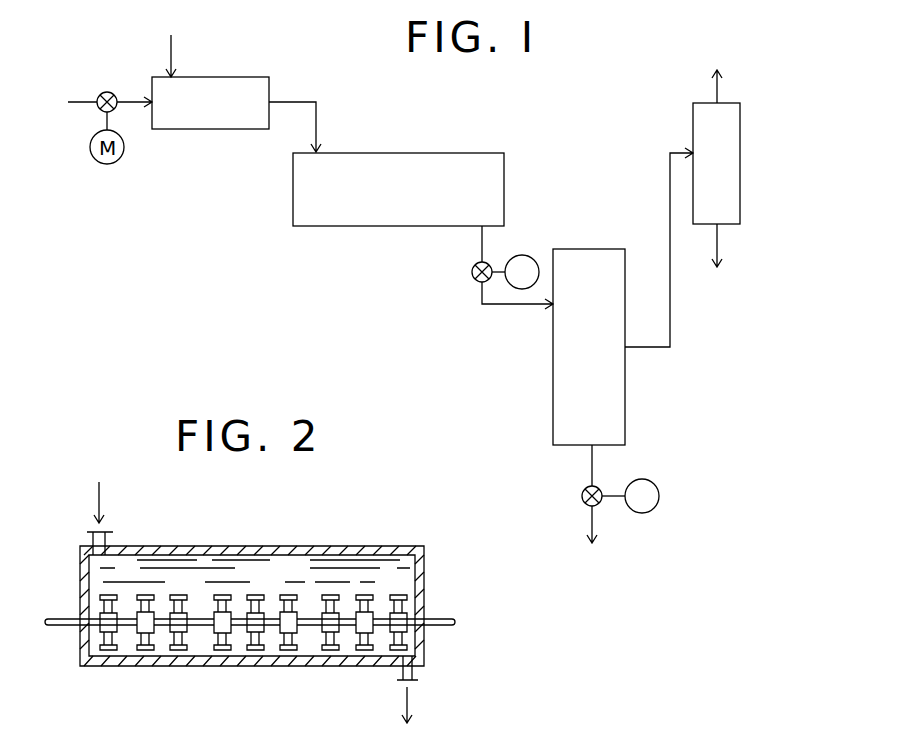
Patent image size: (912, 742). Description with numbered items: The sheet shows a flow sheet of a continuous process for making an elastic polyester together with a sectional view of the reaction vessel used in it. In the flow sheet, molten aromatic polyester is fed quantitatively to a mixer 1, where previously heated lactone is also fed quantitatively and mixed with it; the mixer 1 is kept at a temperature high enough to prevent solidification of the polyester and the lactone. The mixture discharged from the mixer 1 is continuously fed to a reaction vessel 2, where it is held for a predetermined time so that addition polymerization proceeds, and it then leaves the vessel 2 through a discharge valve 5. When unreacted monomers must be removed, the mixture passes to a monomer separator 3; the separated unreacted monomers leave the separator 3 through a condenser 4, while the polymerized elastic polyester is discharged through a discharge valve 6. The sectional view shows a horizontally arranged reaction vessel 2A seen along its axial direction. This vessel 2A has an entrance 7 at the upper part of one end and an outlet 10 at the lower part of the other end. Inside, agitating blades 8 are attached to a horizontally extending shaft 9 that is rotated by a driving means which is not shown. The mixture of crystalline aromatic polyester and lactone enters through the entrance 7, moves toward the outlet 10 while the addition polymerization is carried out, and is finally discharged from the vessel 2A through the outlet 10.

In FIG. 1, the mixer 1 is at (221, 118).
In FIG. 1, the reaction vessel 2 is at (369, 215).
In FIG. 1, the monomer separator 3 is at (562, 363).
In FIG. 1, the condenser 4 is at (729, 185).
In FIG. 1, the discharge valve 5 is at (474, 279).
In FIG. 1, the discharge valve 6 is at (581, 498).
In FIG. 2, the reaction vessel 2A is at (258, 548).
In FIG. 2, the entrance 7 is at (92, 540).
In FIG. 2, the agitating blades 8 is at (176, 650).
In FIG. 2, the shaft 9 is at (65, 625).
In FIG. 2, the outlet 10 is at (415, 676).